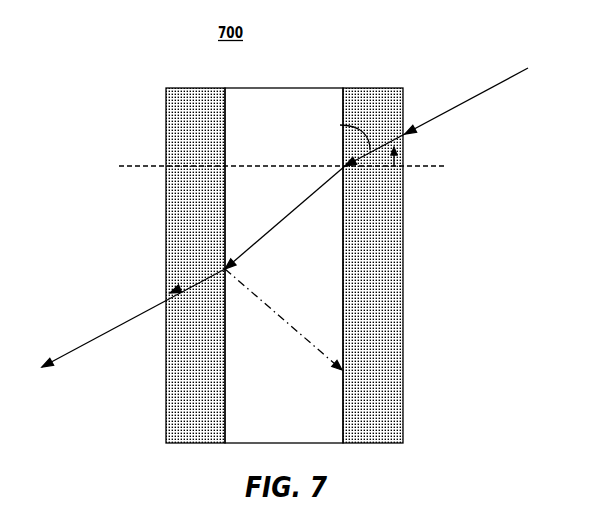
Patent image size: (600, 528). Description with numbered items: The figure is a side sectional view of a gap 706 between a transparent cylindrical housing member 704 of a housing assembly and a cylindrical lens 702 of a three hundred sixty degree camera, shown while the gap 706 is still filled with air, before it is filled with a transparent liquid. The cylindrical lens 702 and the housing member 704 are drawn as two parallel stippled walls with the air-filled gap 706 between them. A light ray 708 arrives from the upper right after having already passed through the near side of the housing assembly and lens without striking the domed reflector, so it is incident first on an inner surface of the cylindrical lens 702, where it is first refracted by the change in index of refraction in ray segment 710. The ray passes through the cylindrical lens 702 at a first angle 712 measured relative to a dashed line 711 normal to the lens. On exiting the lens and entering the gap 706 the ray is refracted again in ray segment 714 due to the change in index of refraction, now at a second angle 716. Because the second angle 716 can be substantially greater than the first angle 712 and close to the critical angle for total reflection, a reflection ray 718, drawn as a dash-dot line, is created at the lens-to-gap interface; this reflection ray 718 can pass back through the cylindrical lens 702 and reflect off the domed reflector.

The cylindrical lens 702 is at (358, 87).
The transparent cylindrical housing member 704 is at (197, 87).
The gap 706 is at (277, 92).
The light ray 708 is at (502, 84).
The ray segment 710 is at (342, 133).
The line normal to the cylindrical lens 711 is at (413, 168).
The first angle 712 is at (395, 157).
The ray segment 714 is at (284, 222).
The second angle 716 is at (294, 174).
The reflection ray 718 is at (311, 345).